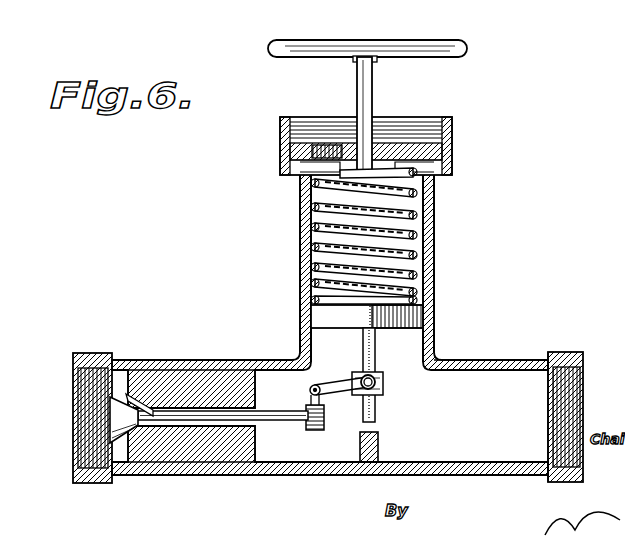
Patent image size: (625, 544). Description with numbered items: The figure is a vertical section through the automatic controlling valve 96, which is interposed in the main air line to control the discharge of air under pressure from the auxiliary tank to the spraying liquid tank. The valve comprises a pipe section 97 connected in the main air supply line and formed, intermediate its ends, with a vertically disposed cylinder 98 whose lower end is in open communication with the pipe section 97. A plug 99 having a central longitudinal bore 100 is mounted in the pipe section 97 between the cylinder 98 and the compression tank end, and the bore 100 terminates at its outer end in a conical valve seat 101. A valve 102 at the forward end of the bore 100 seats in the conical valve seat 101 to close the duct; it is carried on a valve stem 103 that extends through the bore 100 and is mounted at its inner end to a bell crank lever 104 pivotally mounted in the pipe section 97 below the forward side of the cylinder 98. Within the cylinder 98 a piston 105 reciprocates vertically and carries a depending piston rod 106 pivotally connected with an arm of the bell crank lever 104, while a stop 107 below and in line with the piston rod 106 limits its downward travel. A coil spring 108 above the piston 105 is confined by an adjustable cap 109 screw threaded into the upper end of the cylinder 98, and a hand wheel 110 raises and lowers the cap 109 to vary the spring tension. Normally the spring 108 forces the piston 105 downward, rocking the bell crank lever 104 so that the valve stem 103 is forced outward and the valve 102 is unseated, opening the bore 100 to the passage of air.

The automatic controlling valve 96 is at (187, 362).
The pipe section 97 is at (485, 362).
The cylinder 98 is at (436, 252).
The plug 99 is at (222, 386).
The bore 100 is at (233, 427).
The conical valve seat 101 is at (129, 398).
The valve 102 is at (118, 418).
The valve stem 103 is at (267, 427).
The bell crank lever 104 is at (325, 392).
The piston 105 is at (435, 305).
The piston rod 106 is at (372, 356).
The stop 107 is at (380, 440).
The coil spring 108 is at (421, 205).
The adjustable cap 109 is at (445, 148).
The hand wheel 110 is at (453, 40).